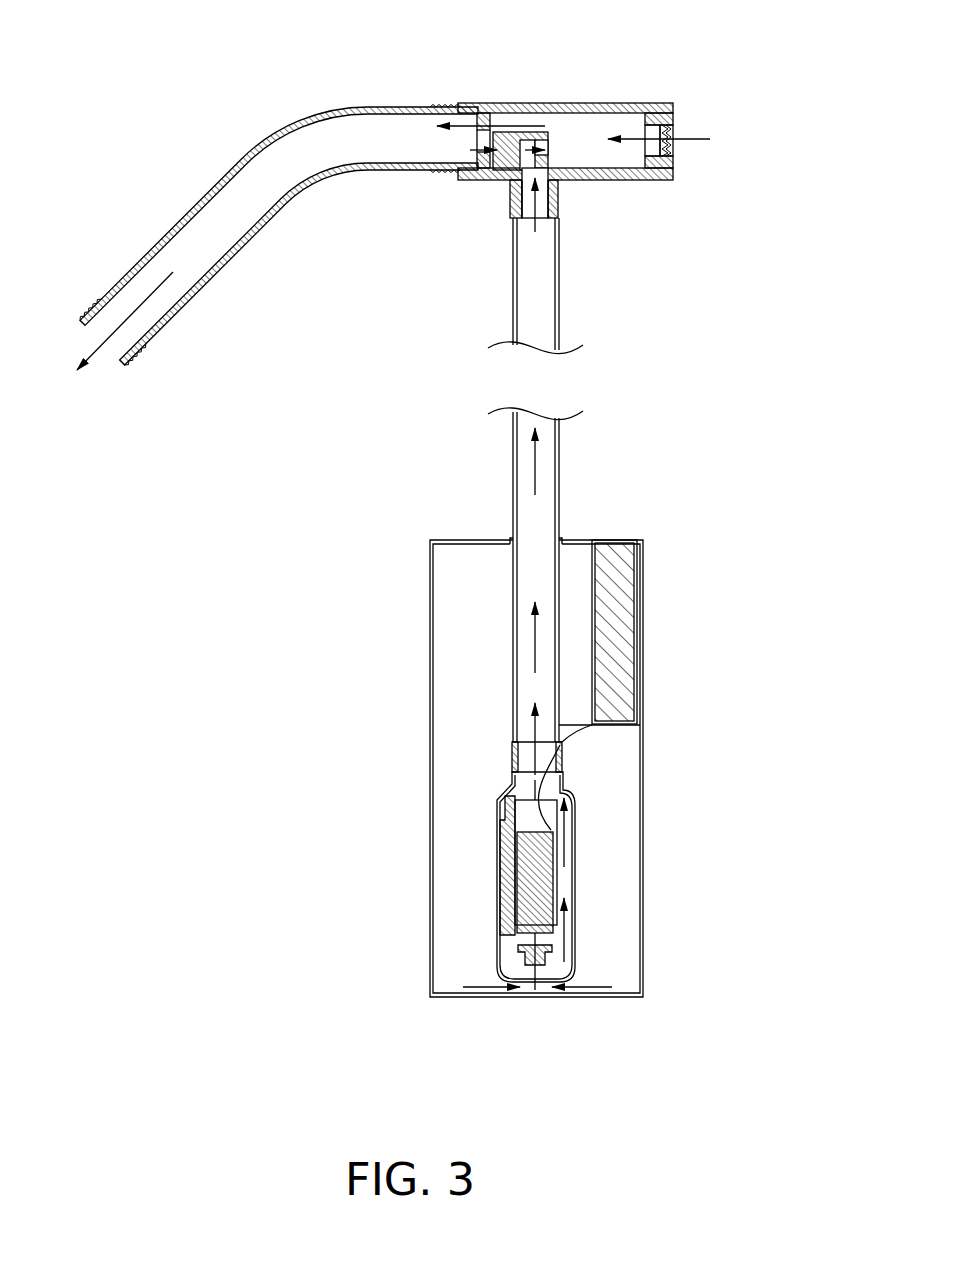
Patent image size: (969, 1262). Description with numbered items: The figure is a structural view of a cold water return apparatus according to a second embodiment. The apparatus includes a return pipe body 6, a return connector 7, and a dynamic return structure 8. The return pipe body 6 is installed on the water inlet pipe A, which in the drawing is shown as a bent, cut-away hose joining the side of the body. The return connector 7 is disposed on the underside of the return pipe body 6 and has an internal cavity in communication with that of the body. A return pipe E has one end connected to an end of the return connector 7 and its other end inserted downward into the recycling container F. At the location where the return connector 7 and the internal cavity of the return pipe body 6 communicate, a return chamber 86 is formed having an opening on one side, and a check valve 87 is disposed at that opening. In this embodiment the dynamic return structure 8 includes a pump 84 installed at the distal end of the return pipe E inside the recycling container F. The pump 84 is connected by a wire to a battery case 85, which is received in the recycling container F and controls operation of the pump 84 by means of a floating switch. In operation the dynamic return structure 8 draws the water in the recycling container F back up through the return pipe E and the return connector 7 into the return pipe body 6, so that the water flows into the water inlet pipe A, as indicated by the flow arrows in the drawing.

The water inlet pipe A is at (311, 206).
The return pipe body 6 is at (567, 105).
The return connector 7 is at (485, 215).
The dynamic return structure 8 is at (801, 510).
The pump 84 is at (540, 887).
The battery case 85 is at (608, 637).
The return chamber 86 is at (537, 145).
The check valve 87 is at (560, 180).
The return pipe E is at (513, 496).
The recycling container F is at (491, 754).